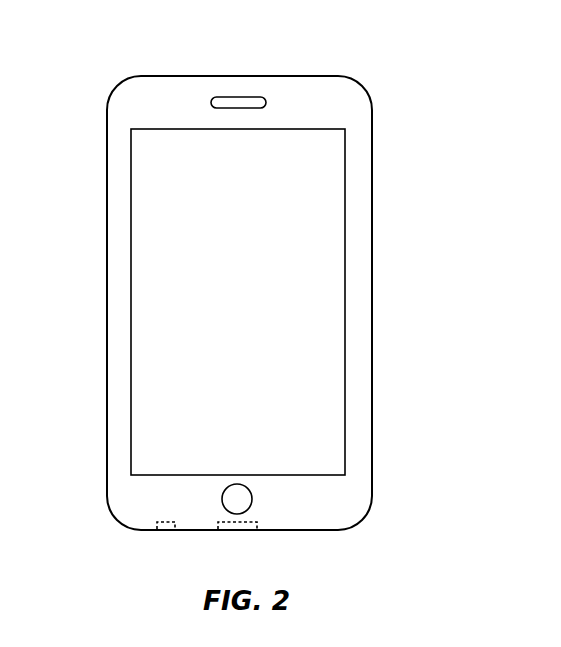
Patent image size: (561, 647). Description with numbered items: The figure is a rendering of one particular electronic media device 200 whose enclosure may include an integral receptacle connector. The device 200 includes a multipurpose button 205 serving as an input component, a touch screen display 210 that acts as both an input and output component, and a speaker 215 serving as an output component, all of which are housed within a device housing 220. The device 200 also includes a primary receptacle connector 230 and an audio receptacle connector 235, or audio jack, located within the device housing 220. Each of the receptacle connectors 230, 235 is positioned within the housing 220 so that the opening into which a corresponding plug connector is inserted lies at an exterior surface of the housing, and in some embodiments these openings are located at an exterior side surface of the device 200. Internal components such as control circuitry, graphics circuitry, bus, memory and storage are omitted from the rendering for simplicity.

The electronic media device 200 is at (319, 55).
The multipurpose button 205 is at (236, 499).
The touch screen display 210 is at (187, 374).
The speaker 215 is at (240, 97).
The device housing 220 is at (107, 318).
The primary receptacle connector 230 is at (247, 530).
The audio receptacle connector 235 is at (165, 527).